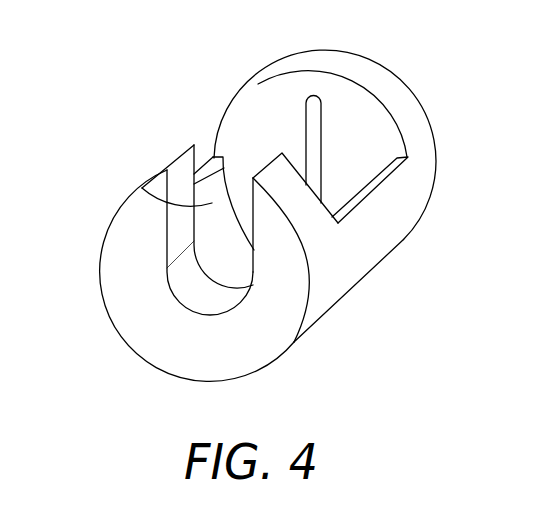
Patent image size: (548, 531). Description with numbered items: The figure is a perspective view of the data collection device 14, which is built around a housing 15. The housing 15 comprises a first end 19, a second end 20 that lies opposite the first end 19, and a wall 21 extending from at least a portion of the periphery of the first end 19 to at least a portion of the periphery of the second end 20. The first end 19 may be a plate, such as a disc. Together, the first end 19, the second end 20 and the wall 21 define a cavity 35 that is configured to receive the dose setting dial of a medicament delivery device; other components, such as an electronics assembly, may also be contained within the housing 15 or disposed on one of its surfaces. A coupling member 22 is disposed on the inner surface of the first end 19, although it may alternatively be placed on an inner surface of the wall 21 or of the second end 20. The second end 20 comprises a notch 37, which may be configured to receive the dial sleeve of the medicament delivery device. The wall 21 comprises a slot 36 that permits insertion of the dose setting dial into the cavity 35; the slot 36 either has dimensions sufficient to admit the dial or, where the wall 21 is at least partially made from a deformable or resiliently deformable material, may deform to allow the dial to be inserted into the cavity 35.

The data collection device 14 is at (253, 208).
The housing 15 is at (400, 243).
The first end 19 is at (317, 52).
The second end 20 is at (128, 290).
The wall 21 is at (347, 283).
The coupling member 22 is at (317, 115).
The cavity 35 is at (140, 183).
The slot 36 is at (210, 163).
The notch 37 is at (243, 293).